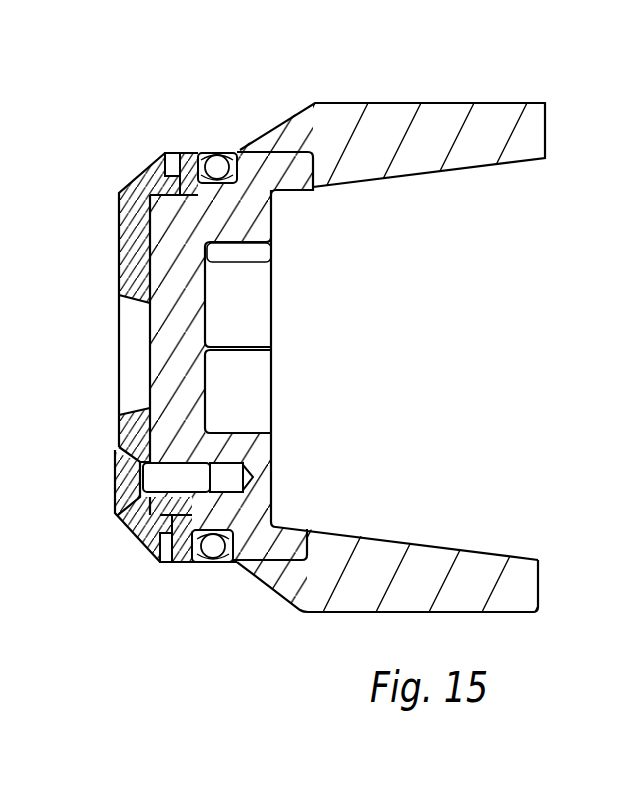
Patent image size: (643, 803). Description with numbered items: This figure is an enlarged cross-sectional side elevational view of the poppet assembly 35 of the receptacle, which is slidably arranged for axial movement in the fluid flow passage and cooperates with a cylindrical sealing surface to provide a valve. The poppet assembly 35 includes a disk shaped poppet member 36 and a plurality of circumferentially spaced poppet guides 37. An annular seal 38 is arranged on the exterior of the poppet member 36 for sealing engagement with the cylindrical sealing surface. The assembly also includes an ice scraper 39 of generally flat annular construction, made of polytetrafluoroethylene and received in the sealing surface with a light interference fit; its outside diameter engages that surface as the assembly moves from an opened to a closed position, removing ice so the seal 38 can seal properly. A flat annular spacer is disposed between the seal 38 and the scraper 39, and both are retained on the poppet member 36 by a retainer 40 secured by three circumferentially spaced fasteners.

The poppet assembly 35 is at (512, 104).
The poppet member 36 is at (158, 345).
The poppet guides 37 is at (405, 165).
The annular seal 38 is at (200, 158).
The ice scraper 39 is at (172, 155).
The retainer 40 is at (120, 228).